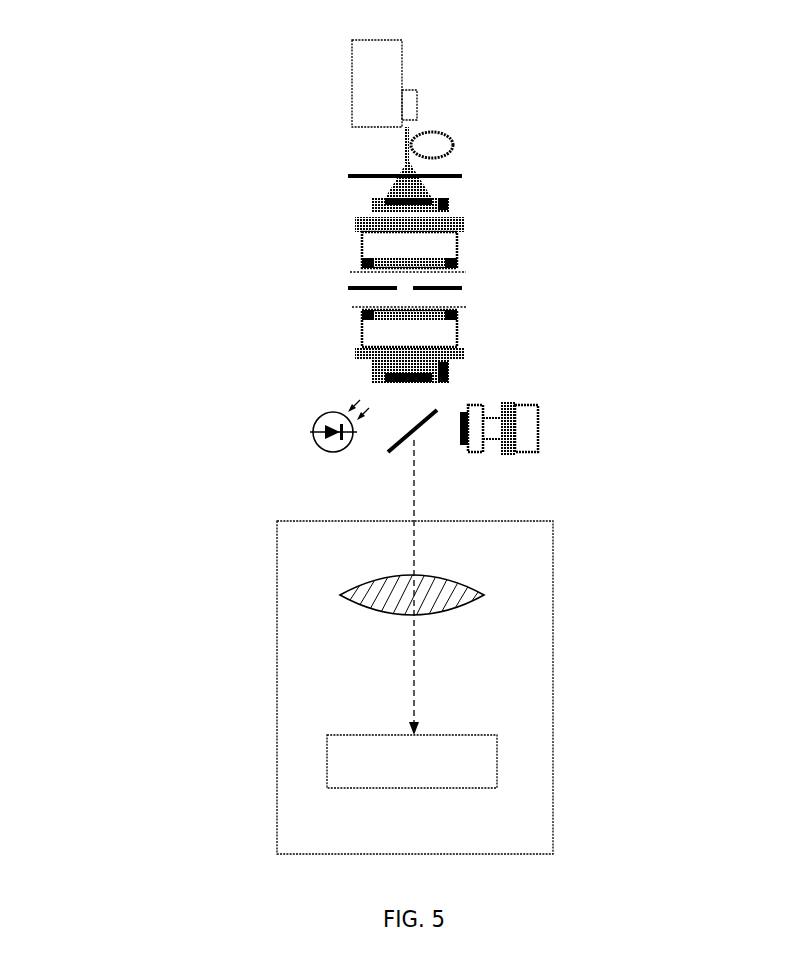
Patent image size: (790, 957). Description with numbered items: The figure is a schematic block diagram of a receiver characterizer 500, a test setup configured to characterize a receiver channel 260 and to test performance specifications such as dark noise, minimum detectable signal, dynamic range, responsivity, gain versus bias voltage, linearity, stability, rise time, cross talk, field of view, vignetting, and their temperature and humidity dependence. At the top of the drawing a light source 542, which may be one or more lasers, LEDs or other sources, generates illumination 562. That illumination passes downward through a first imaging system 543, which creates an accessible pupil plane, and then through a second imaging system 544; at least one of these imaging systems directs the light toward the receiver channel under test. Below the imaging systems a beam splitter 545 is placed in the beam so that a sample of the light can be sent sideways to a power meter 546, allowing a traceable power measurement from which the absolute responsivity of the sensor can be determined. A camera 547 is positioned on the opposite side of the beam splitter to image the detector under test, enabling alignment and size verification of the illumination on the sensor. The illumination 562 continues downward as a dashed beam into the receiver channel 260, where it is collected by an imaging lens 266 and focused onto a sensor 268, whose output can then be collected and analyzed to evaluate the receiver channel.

The receiver characterizer 500 is at (148, 48).
The light source 542 is at (402, 101).
The first imaging system 543 is at (563, 167).
The second imaging system 544 is at (563, 293).
The beam splitter 545 is at (437, 408).
The power meter 546 is at (320, 410).
The camera 547 is at (538, 428).
The illumination 562 is at (414, 497).
The receiver channel 260 is at (415, 687).
The imaging lens 266 is at (415, 594).
The sensor 268 is at (412, 761).